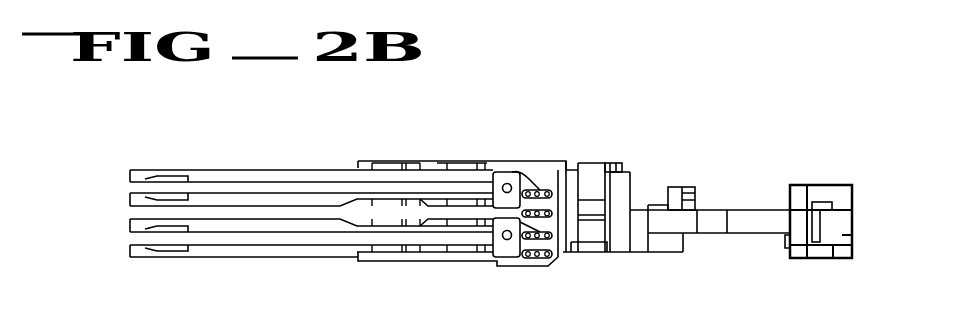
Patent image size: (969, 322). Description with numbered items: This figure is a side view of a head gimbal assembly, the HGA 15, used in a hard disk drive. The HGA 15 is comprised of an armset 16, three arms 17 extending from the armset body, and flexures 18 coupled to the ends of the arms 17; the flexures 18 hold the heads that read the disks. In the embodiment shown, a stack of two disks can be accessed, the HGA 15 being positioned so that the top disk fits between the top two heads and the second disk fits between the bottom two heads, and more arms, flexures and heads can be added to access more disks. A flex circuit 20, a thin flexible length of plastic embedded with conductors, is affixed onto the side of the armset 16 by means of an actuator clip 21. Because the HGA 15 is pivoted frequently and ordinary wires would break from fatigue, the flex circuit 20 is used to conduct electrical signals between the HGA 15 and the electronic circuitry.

The head gimbal assembly 15 is at (617, 162).
The armset 16 is at (542, 160).
The arms 17 is at (360, 167).
The flexures 18 is at (237, 245).
The flex circuit 20 is at (597, 162).
The actuator clip 21 is at (723, 210).